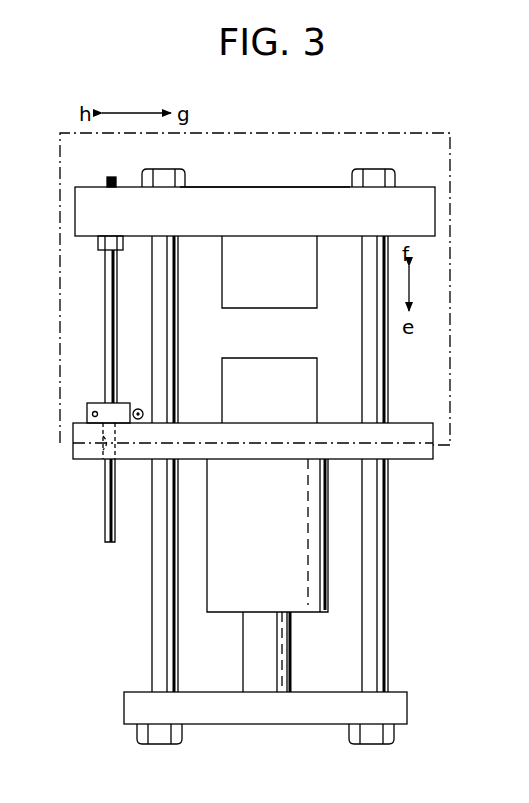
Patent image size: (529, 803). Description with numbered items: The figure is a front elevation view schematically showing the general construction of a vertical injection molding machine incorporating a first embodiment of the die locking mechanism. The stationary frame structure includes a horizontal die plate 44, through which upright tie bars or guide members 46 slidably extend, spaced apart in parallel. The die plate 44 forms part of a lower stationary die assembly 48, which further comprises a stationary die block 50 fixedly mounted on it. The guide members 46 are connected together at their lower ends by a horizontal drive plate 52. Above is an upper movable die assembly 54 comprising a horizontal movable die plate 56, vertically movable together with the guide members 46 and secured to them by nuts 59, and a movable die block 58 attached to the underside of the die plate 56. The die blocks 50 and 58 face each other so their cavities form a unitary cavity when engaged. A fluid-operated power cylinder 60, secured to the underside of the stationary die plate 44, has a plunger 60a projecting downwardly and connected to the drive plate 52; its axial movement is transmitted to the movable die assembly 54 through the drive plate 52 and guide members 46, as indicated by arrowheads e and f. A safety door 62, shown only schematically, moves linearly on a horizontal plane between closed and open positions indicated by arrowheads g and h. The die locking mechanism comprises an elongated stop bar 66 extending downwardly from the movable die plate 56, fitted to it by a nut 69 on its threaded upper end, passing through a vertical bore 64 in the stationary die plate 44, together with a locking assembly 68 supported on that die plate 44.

The die plate 44 is at (413, 460).
The guide members 46 is at (388, 546).
The lower stationary die assembly 48 is at (337, 412).
The stationary die block 50 is at (222, 372).
The drive plate 52 is at (313, 725).
The upper movable die assembly 54 is at (334, 172).
The movable die plate 56 is at (262, 187).
The movable die block 58 is at (317, 280).
The nuts 59 is at (187, 180).
The power cylinder 60 is at (298, 618).
The plunger 60a is at (243, 658).
The safety door 62 is at (452, 321).
The bore 64 is at (100, 460).
The stop bar 66 is at (103, 347).
The locking assembly 68 is at (85, 414).
The nut 69 is at (122, 244).